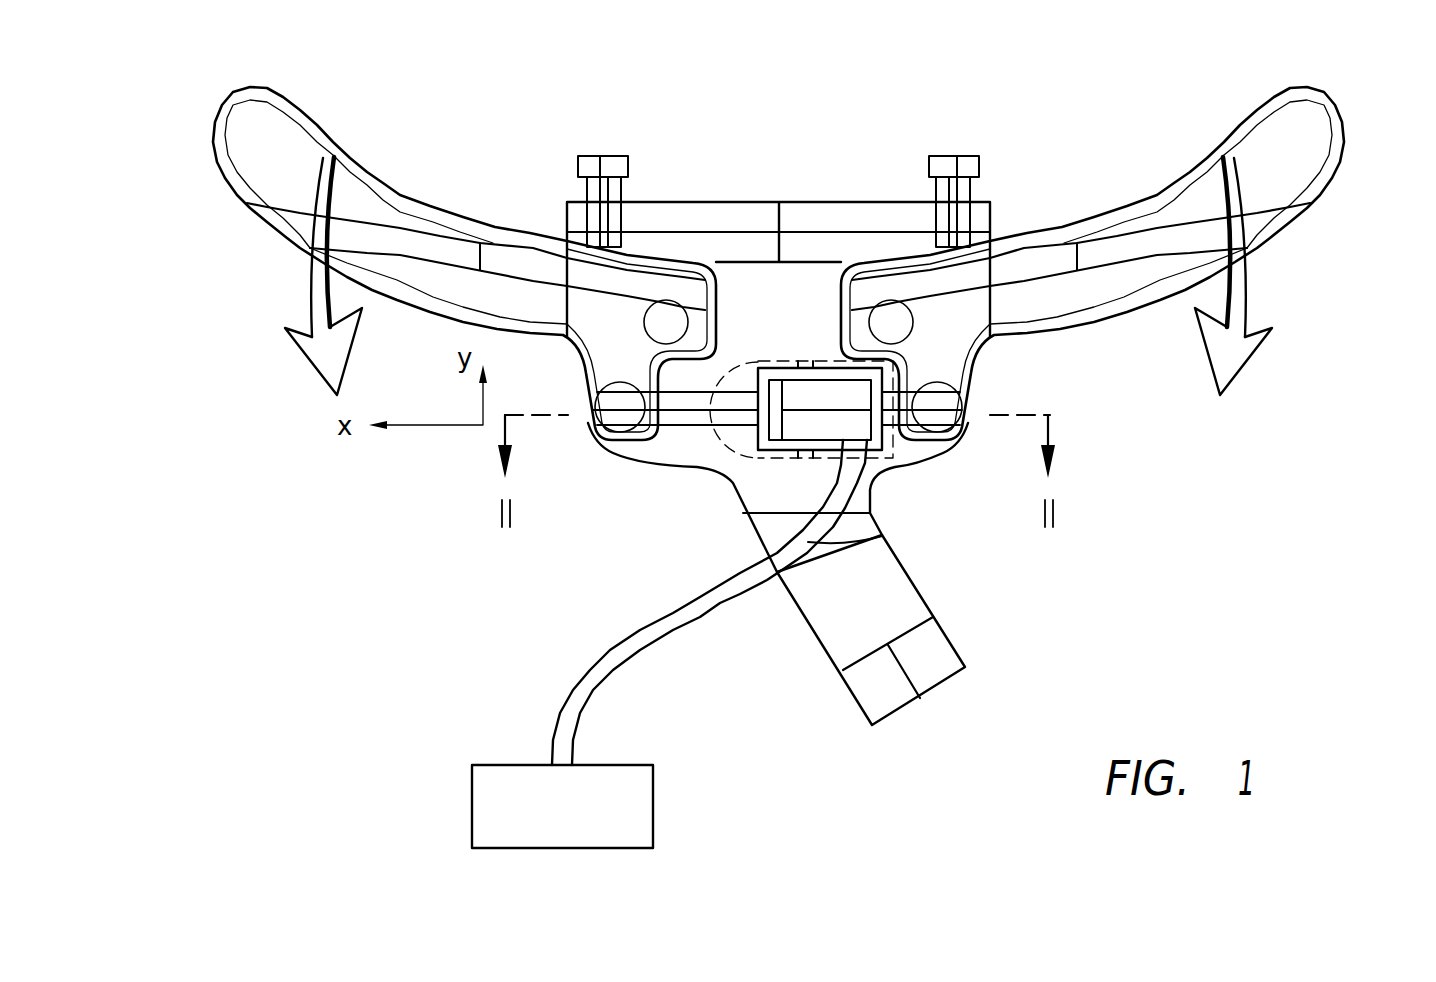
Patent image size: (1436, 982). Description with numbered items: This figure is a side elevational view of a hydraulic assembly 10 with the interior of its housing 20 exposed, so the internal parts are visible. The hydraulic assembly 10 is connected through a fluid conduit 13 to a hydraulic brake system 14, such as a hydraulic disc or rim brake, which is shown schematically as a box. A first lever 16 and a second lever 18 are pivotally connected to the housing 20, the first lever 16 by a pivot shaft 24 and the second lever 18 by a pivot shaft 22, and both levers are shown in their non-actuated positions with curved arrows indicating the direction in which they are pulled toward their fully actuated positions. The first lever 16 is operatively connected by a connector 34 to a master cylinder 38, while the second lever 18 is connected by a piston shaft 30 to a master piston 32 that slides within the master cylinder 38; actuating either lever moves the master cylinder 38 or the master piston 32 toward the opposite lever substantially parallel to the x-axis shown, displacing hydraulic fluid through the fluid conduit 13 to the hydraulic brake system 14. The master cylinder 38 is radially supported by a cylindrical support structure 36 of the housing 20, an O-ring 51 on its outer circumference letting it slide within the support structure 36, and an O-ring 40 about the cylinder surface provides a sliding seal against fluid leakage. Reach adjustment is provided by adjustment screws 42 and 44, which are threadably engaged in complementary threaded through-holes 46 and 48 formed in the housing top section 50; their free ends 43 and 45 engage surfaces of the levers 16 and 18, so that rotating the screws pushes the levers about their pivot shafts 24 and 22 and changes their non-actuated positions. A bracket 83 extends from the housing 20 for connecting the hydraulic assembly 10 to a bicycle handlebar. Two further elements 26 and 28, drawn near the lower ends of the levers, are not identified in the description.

The hydraulic assembly 10 is at (992, 574).
The fluid conduit 13 is at (627, 633).
The hydraulic brake system 14 is at (575, 824).
The first lever 16 is at (1343, 122).
The second lever 18 is at (217, 122).
The housing 20 is at (792, 310).
The pivot shaft 22 is at (667, 322).
The pivot shaft 24 is at (890, 322).
The left stop pin 26 is at (618, 415).
The right stop pin 28 is at (950, 402).
The piston shaft 30 is at (697, 416).
The master piston 32 is at (820, 412).
The connector 34 is at (893, 455).
The support structure 36 is at (757, 362).
The master cylinder 38 is at (758, 452).
The O-ring 40 is at (827, 363).
The adjustment screw 42 is at (975, 185).
The free end 43 is at (958, 227).
The adjustment screw 44 is at (578, 182).
The free end 45 is at (580, 201).
The threaded through-hole 46 is at (623, 210).
The threaded through-hole 48 is at (995, 210).
The housing top section 50 is at (758, 231).
The O-ring 51 is at (797, 458).
The bracket 83 is at (870, 628).